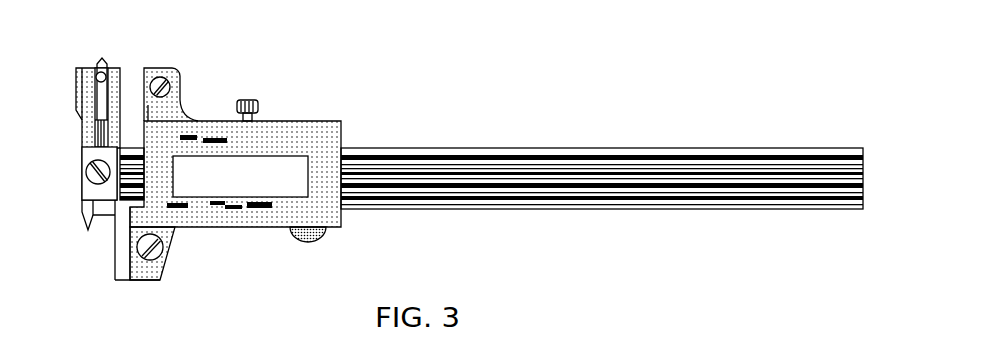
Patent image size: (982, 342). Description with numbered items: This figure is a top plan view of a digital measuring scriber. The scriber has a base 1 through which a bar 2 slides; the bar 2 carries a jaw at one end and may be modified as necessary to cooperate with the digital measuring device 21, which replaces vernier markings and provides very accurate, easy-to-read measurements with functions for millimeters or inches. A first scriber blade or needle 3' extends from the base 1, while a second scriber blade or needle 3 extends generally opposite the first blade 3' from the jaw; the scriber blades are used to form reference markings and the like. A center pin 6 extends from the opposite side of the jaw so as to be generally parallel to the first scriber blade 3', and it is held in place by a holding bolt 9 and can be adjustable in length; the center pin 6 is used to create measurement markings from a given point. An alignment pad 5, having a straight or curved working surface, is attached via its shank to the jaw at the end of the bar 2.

The base 1 is at (316, 126).
The bar 2 is at (530, 148).
The scriber blade or needle 3 is at (109, 257).
The first scriber blade or needle 3' is at (180, 62).
The alignment pad 5 is at (75, 85).
The center pin 6 is at (97, 60).
The holding bolt 9 is at (104, 81).
The digital measuring device 21 is at (288, 184).